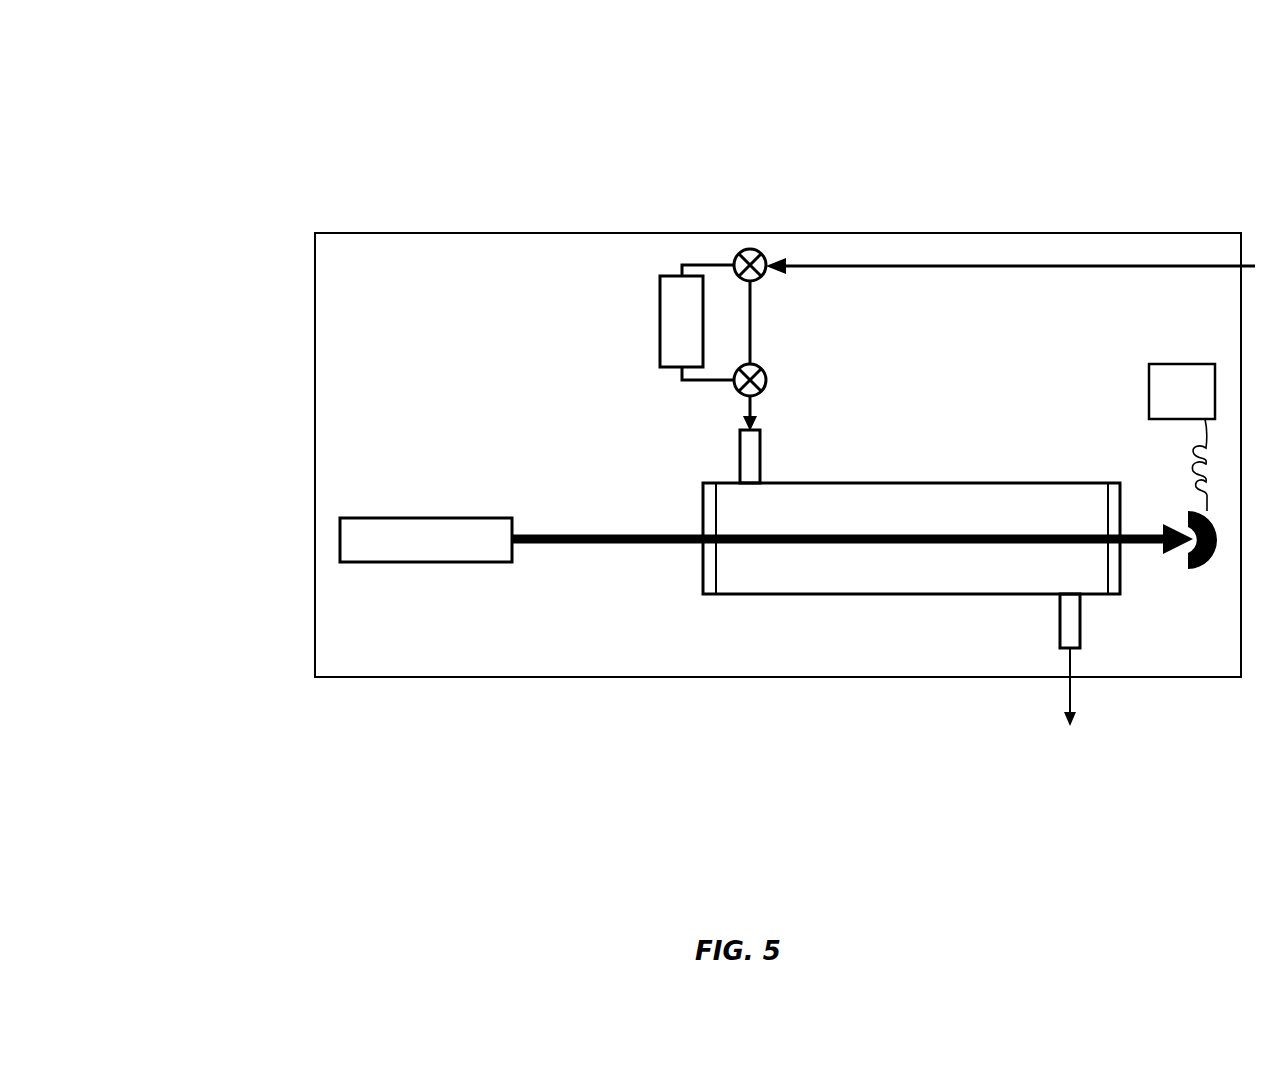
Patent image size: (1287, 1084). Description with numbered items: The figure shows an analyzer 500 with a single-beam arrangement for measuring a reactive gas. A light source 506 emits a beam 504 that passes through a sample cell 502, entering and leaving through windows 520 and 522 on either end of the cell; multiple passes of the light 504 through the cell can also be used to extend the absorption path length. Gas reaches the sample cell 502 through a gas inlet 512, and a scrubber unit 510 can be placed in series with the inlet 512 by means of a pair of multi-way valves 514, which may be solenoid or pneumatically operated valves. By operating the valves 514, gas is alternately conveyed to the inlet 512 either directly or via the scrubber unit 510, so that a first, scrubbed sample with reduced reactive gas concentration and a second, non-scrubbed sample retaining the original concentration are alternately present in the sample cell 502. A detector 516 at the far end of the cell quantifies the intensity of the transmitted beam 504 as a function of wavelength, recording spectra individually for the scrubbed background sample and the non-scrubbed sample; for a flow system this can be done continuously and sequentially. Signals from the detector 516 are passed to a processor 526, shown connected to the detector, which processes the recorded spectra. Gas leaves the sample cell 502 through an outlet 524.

The analyzer 500 is at (258, 123).
The sample cell 502 is at (876, 577).
The beam 504 is at (601, 545).
The light source 506 is at (387, 533).
The scrubber unit 510 is at (676, 327).
The gas inlet 512 is at (762, 454).
The multi-way valves 514 is at (758, 280).
The detector 516 is at (1187, 567).
The window 520 is at (711, 578).
The window 522 is at (1116, 493).
The outlet 524 is at (1065, 631).
The controller / processor 526 is at (1182, 437).